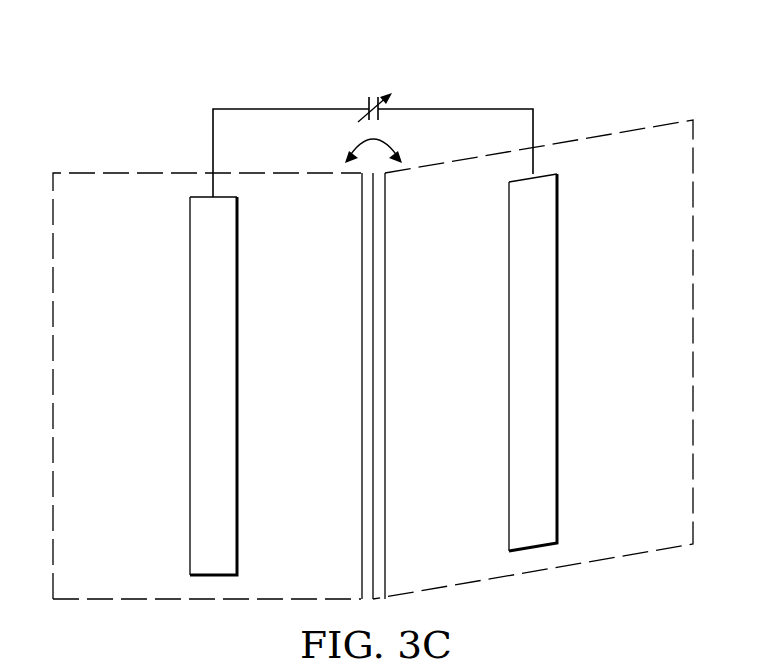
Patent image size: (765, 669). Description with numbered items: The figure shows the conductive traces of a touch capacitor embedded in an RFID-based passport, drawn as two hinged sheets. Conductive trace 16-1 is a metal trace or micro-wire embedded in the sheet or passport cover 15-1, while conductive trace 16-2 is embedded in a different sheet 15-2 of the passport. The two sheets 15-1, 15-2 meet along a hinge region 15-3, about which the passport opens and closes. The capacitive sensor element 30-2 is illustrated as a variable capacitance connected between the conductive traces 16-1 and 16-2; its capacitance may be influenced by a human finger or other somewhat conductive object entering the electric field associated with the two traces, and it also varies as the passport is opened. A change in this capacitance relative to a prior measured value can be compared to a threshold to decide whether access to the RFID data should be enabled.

The sheet or passport cover 15-1 is at (80, 168).
The sheet 15-2 is at (640, 126).
The hinge 15-3 is at (385, 527).
The conductive trace 16-1 is at (190, 275).
The conductive trace 16-2 is at (557, 358).
The capacitive sensor element 30-2 is at (372, 95).